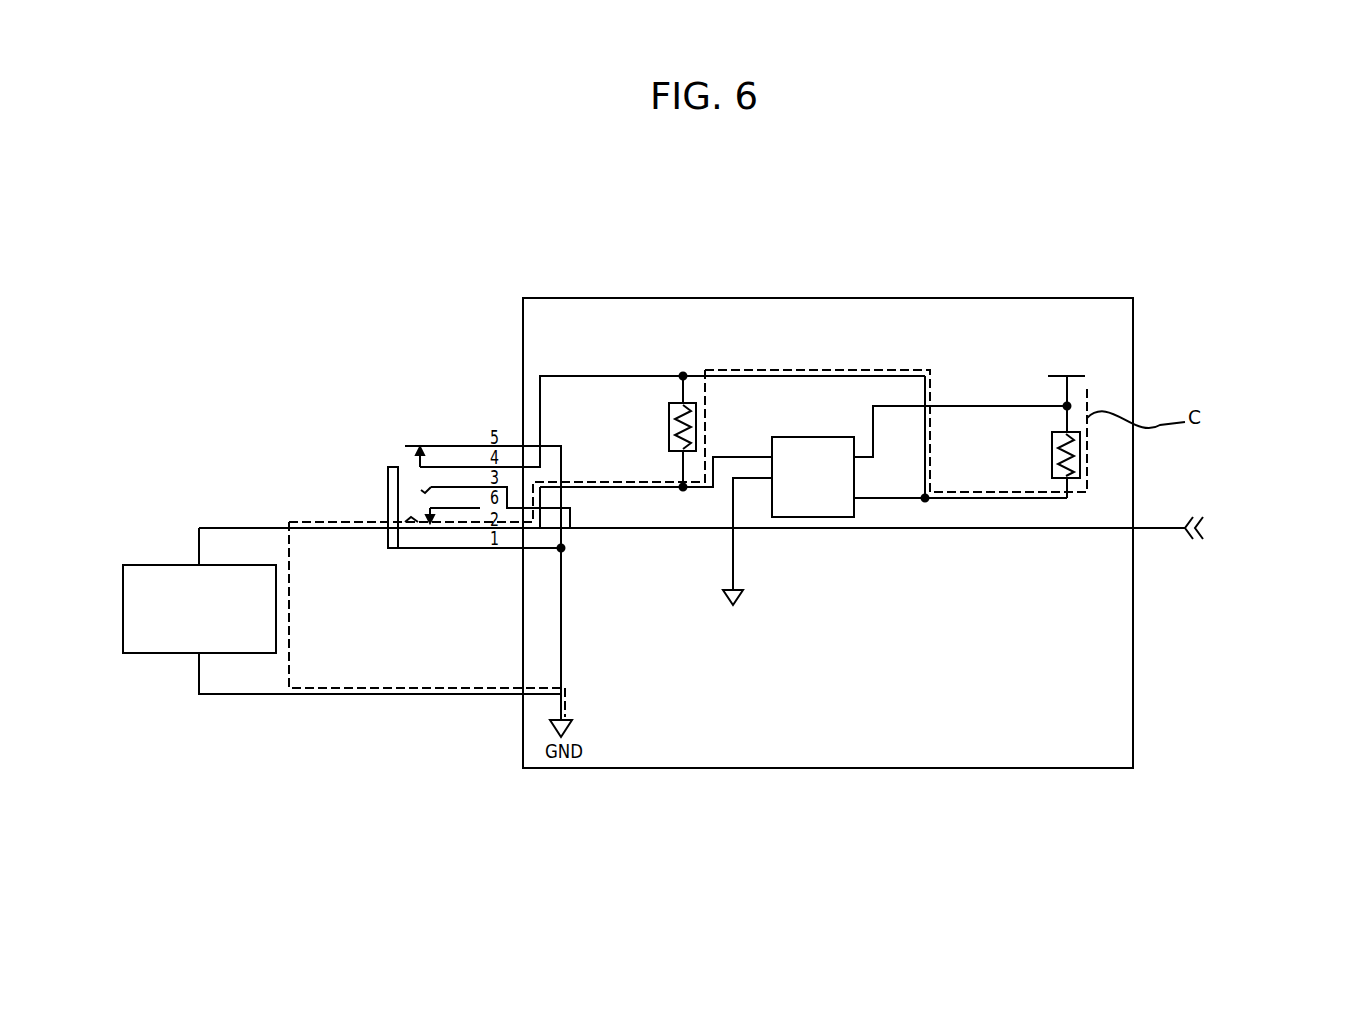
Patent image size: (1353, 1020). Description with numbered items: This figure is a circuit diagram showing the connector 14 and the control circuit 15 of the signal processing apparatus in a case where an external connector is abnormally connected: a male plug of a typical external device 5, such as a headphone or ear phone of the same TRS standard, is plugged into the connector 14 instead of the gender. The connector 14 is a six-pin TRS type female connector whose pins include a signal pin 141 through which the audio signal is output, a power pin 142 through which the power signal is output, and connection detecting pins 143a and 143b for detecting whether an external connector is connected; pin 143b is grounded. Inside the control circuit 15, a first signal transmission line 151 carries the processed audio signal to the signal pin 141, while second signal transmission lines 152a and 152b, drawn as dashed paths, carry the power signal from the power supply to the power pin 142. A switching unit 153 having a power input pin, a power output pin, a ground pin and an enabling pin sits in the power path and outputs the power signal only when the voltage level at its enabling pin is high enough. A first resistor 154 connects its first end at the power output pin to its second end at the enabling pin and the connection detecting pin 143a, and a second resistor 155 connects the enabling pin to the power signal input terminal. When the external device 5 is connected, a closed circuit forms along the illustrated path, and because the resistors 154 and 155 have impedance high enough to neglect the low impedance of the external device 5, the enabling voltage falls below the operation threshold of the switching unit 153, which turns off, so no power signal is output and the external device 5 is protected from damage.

The external device 5 is at (123, 610).
The connector 14 is at (388, 486).
The control circuit 15 is at (795, 298).
The signal pin 141 is at (436, 488).
The power pin 142 is at (486, 532).
The connection detecting pin 143a is at (427, 467).
The connection detecting pin 143b is at (477, 446).
The first signal transmission line 151 is at (943, 533).
The second signal transmission line 152a is at (940, 403).
The second signal transmission line 152b is at (608, 482).
The switching unit 153 is at (818, 520).
The first resistor 154 is at (703, 410).
The second resistor 155 is at (1052, 448).